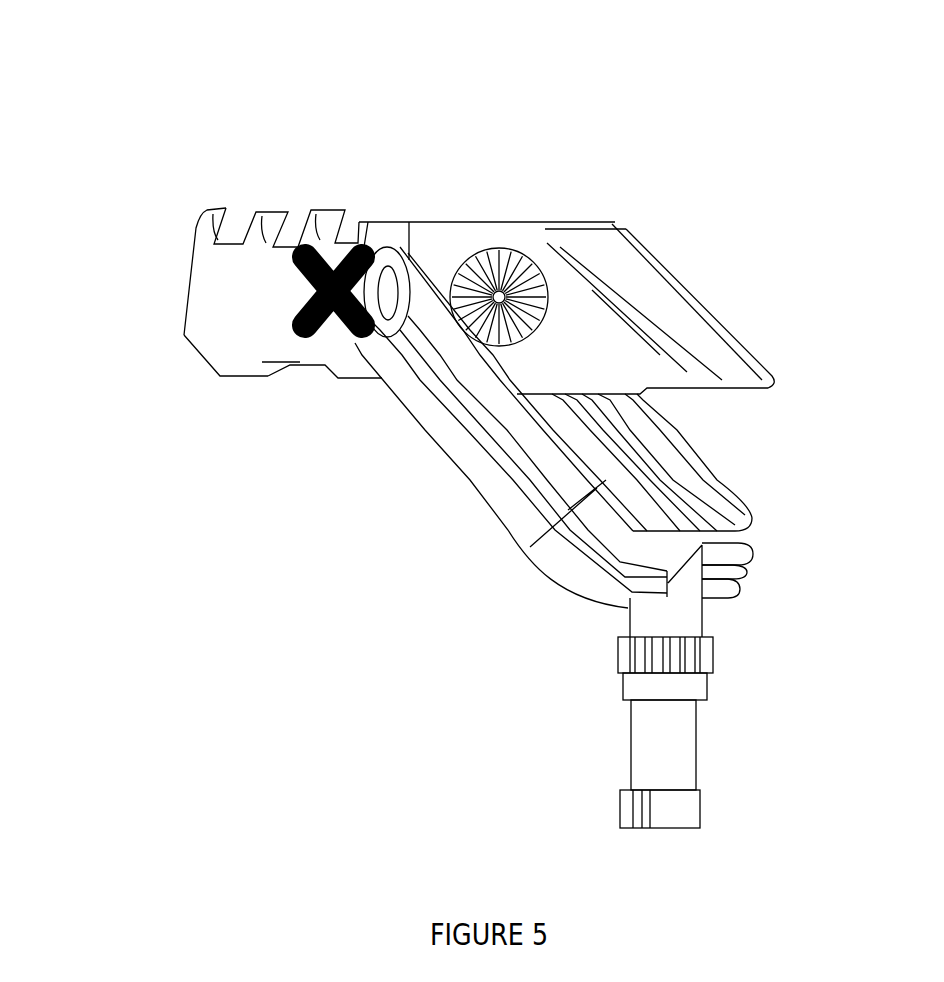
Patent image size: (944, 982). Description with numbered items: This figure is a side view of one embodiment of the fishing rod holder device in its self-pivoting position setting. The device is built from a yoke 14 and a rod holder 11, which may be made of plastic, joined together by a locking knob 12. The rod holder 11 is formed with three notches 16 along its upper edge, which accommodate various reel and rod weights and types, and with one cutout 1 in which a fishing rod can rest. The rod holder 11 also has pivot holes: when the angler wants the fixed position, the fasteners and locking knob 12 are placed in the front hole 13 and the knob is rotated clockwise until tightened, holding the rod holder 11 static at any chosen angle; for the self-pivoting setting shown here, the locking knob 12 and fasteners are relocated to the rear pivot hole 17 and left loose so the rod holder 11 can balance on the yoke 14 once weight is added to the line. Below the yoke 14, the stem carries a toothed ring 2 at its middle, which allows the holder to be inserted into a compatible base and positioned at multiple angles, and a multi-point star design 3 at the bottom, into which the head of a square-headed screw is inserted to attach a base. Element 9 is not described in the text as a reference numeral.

The cutout 1 is at (317, 380).
The toothed ring 2 is at (720, 682).
The multi-point star design 3 is at (710, 820).
The top plate 9 is at (747, 400).
The rod holder 11 is at (160, 300).
The locking knob 12 is at (377, 233).
The front hole 13 is at (506, 240).
The yoke 14 is at (758, 520).
The notches 16 is at (289, 207).
The rear pivot hole 17 is at (421, 240).